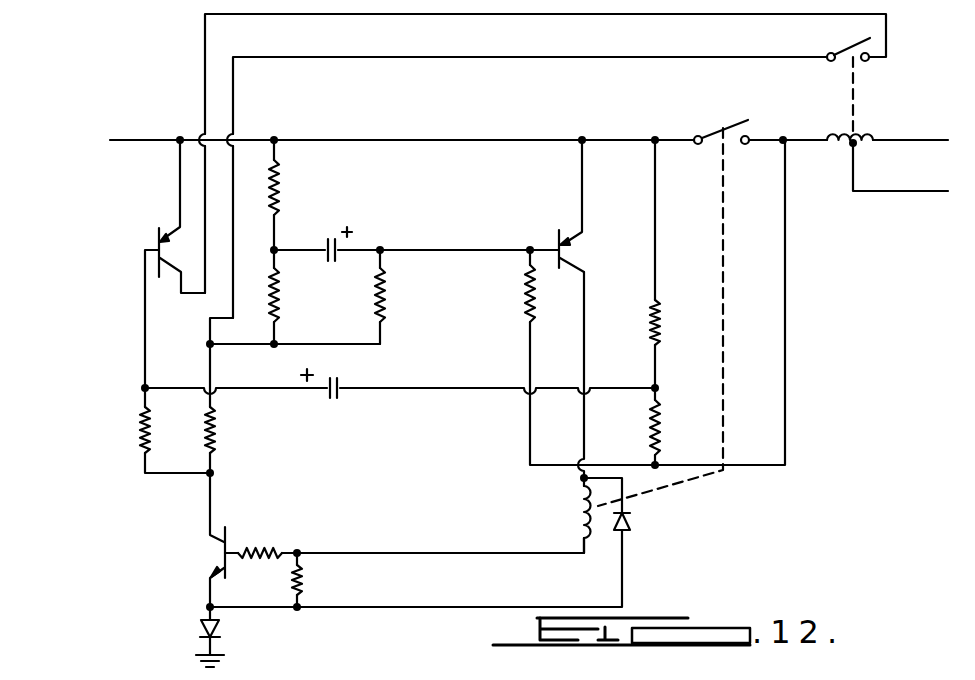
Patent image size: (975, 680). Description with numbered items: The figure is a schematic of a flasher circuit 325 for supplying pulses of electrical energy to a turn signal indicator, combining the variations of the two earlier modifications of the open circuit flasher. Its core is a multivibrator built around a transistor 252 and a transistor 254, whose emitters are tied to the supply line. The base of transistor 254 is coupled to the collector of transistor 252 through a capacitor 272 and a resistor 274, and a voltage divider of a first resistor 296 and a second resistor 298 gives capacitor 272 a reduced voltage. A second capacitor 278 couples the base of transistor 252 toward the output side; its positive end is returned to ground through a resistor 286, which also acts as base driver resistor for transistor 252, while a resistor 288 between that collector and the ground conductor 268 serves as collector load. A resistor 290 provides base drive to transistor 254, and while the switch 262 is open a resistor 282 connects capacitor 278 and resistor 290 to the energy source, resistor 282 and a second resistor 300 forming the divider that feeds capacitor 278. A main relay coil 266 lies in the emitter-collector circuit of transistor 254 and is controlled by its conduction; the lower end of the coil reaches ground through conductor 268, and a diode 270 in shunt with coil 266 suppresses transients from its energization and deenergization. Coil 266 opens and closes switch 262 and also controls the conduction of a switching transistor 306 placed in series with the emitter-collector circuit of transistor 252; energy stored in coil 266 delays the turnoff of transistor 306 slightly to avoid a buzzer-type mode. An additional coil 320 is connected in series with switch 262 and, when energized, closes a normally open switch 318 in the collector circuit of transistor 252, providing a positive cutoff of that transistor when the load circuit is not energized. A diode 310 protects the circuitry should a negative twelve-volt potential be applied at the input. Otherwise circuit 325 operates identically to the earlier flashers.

The transistor 252 is at (160, 244).
The transistor 254 is at (565, 256).
The circuit controlling switch 262 is at (714, 122).
The coil 266 is at (578, 508).
The conductor 268 is at (201, 649).
The diode 270 is at (632, 524).
The capacitor 272 is at (331, 238).
The resistor 274 is at (386, 297).
The second capacitor 278 is at (333, 404).
The resistor 282 is at (652, 318).
The resistor 286 is at (140, 421).
The resistor 288 is at (218, 427).
The resistor 290 is at (530, 298).
The first resistor 296 is at (282, 178).
The second resistor 298 is at (280, 306).
The second resistor 300 is at (652, 428).
The switching transistor 306 is at (226, 541).
The diode 310 is at (200, 626).
The switch 318 is at (850, 36).
The coil 320 is at (832, 133).
The circuit 325 is at (440, 488).